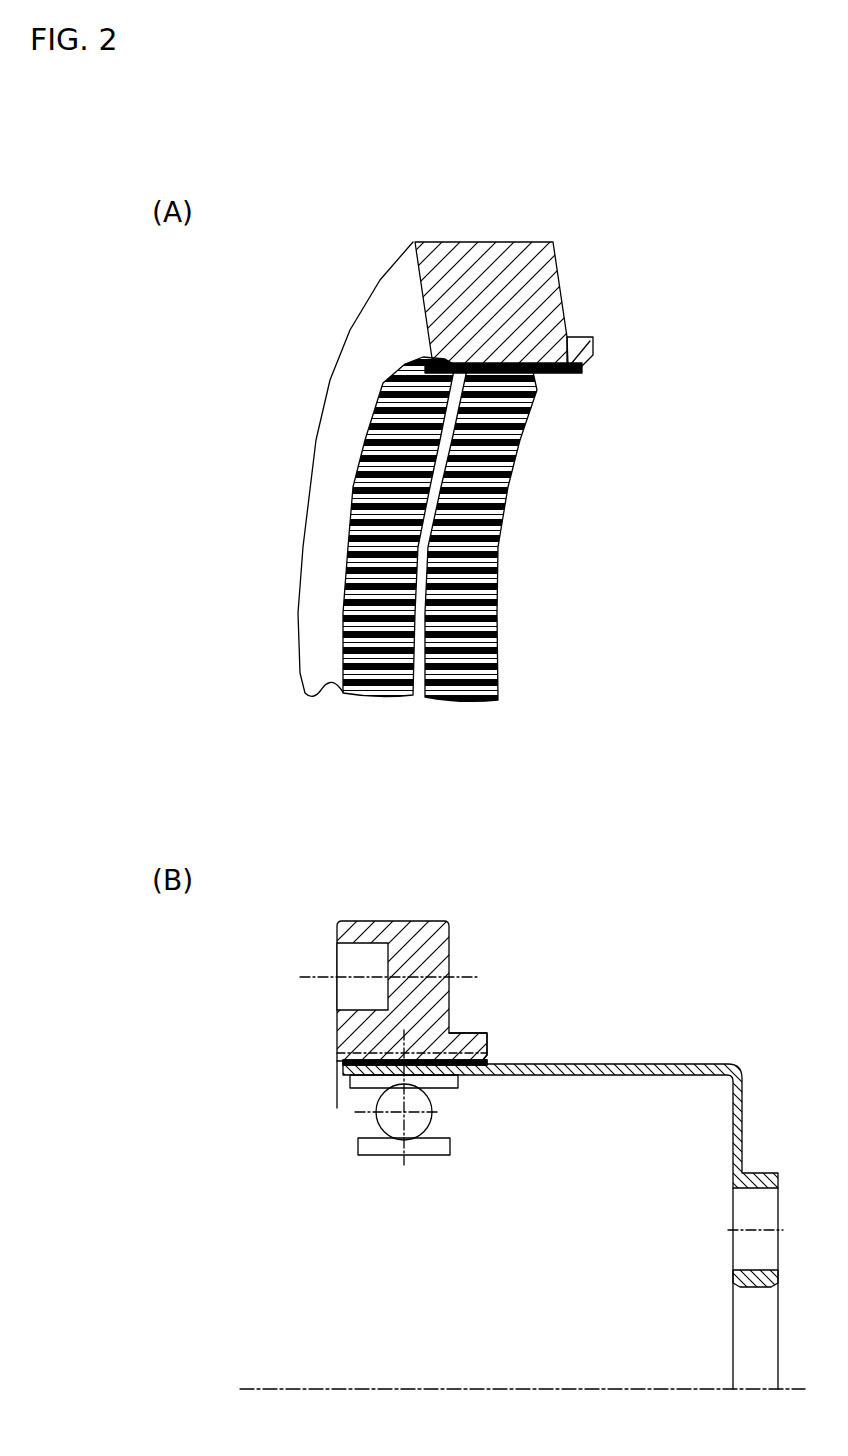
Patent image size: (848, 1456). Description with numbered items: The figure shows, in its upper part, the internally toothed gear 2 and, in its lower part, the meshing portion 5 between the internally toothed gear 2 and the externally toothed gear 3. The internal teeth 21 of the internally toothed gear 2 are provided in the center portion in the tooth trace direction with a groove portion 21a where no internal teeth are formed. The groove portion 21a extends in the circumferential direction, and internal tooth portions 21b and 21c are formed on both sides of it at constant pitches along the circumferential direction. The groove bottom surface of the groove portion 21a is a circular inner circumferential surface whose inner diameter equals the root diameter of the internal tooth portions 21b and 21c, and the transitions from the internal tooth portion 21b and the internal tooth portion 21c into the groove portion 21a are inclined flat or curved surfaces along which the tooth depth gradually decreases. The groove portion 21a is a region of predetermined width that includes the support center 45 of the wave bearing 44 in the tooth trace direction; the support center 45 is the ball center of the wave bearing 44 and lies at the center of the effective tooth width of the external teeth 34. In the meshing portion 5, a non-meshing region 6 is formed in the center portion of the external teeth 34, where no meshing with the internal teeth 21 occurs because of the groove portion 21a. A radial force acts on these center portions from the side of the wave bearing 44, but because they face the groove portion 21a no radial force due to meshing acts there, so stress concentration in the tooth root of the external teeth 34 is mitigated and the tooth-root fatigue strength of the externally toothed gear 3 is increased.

The internally toothed gear 2 is at (310, 392).
The internal teeth 21 is at (504, 653).
The groove portion 21a is at (520, 350).
The internal tooth portion 21b is at (473, 357).
The internal tooth portion 21c is at (553, 351).
The externally toothed gear 3 is at (513, 1055).
The meshing portion 5 is at (330, 1056).
The non-meshing region 6 is at (382, 1007).
The external teeth 34 is at (382, 1073).
The wave bearing 44 is at (456, 1118).
The support center 45 is at (405, 1112).